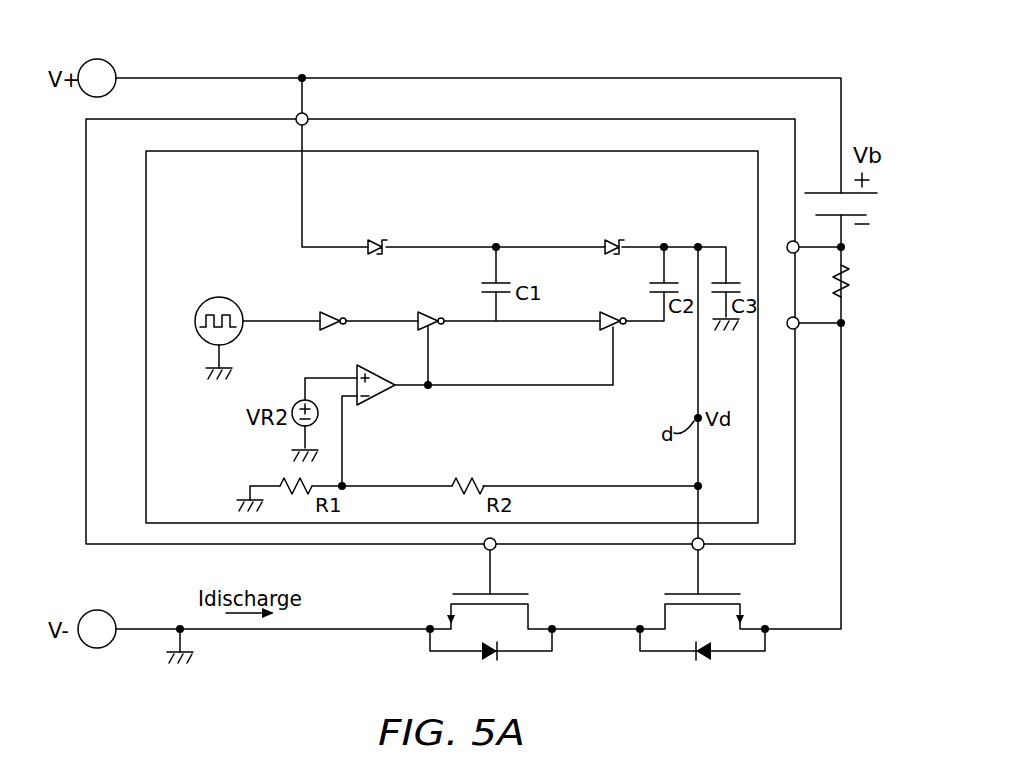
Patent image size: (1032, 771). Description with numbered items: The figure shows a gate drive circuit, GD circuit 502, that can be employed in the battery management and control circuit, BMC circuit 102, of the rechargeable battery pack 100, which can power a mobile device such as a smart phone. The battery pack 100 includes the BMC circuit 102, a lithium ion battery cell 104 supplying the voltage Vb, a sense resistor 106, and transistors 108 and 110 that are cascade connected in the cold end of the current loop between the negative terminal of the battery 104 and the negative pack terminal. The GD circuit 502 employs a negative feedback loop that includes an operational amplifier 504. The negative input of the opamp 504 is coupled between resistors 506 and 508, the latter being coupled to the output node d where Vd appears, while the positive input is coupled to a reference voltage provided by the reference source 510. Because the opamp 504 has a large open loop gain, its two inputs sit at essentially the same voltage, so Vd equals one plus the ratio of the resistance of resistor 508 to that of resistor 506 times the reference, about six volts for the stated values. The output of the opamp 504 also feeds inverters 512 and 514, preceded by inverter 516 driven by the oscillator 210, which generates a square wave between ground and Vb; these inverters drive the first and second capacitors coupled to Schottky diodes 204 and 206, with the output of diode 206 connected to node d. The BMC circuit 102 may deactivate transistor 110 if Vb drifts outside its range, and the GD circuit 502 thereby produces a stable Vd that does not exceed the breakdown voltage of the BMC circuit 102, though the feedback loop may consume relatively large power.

The rechargeable battery pack 100 is at (855, 40).
The battery management and control circuit 102 is at (780, 146).
The GD circuit 502 is at (740, 181).
The lithium ion battery cell 104 is at (830, 192).
The sense resistor 106 is at (834, 290).
The transistor 108 is at (528, 577).
The transistor 110 is at (713, 592).
The Schottky diode 204 is at (372, 240).
The Schottky diode 206 is at (609, 240).
The oscillator 210 is at (230, 297).
The operational amplifier 504 is at (355, 373).
The resistor 506 is at (282, 478).
The resistor 508 is at (480, 477).
The reference voltage source VR2 510 is at (296, 400).
The inverter 512 is at (428, 311).
The inverter 514 is at (608, 313).
The inverter 516 is at (333, 311).